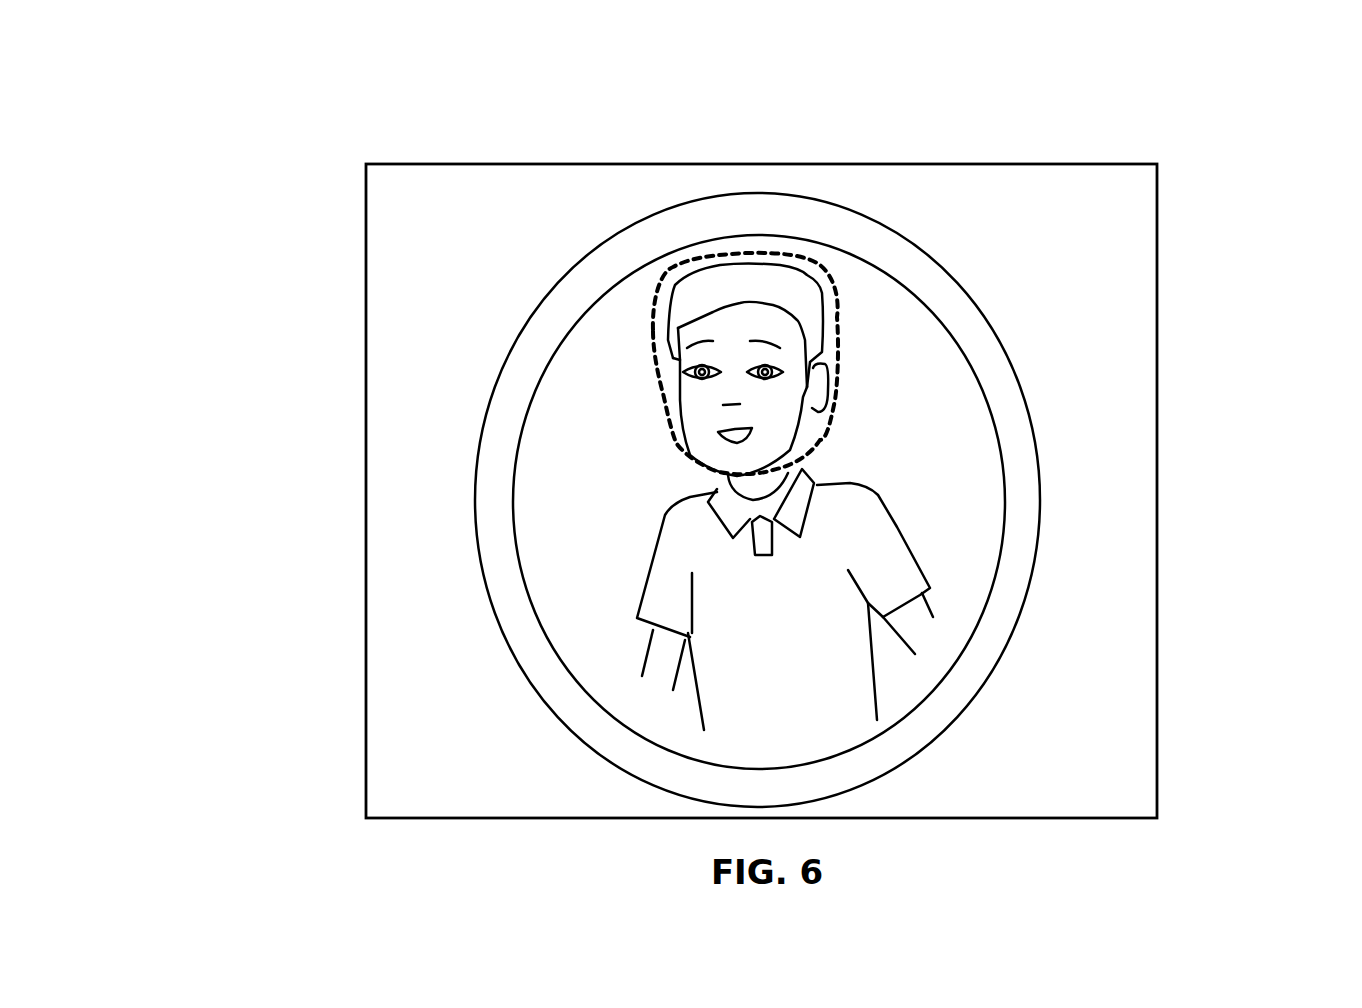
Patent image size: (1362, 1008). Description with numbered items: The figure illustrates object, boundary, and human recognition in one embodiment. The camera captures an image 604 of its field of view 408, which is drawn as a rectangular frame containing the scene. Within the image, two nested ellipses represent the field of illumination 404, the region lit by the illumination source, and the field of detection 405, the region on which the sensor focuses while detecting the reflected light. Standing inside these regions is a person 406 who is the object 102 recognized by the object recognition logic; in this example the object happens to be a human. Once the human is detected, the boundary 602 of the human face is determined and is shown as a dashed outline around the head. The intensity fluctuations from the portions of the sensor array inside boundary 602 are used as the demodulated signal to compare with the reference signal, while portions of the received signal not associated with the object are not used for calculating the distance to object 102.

The image 604 is at (366, 380).
The field of view 408 is at (641, 491).
The field of detection 405 is at (587, 250).
The field of illumination 404 is at (663, 257).
The boundary 602 is at (838, 308).
The object 102 is at (895, 528).
The person 406 is at (986, 497).